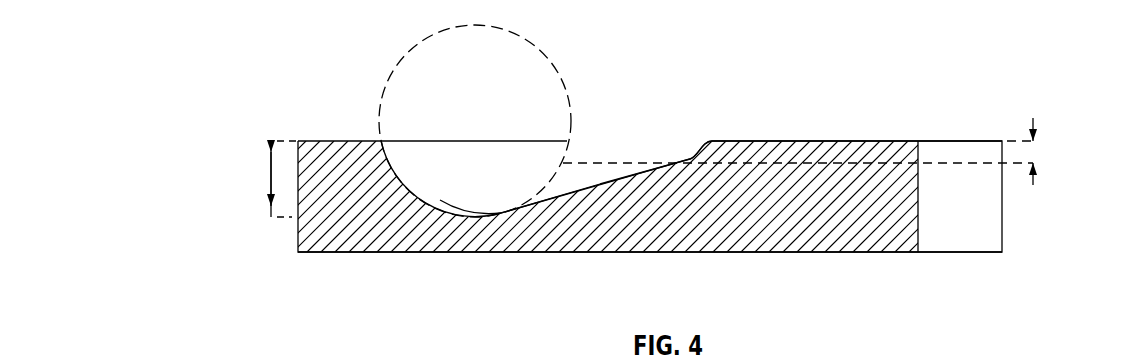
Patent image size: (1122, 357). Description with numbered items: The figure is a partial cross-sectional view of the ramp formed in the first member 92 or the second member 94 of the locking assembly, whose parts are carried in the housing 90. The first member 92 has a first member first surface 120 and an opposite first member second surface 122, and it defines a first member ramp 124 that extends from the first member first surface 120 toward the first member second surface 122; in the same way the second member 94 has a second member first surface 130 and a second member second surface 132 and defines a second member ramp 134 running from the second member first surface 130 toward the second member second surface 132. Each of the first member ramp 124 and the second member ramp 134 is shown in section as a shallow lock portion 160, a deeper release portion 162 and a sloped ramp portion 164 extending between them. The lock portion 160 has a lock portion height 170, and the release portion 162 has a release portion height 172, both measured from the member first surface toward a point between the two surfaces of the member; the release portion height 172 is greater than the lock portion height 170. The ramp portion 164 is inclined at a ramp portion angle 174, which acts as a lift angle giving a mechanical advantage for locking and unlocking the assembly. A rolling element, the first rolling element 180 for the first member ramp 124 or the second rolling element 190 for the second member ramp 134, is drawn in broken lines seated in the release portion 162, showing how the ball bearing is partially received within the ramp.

The housing 90 is at (861, 354).
The first member 92 is at (593, 153).
The second member 94 is at (887, 113).
The first member first surface 120 is at (857, 128).
The second member first surface 130 is at (763, 141).
The first member second surface 122 is at (650, 269).
The second member second surface 132 is at (855, 252).
The first member ramp 124 is at (552, 142).
The second member ramp 134 is at (637, 157).
The lock portion 160 is at (690, 162).
The release portion 162 is at (485, 218).
The ramp portion 164 is at (572, 195).
The ramp portion angle 174 is at (640, 182).
The lock portion height 170 is at (1035, 130).
The release portion height 172 is at (271, 178).
The first rolling element 180 is at (419, 121).
The second rolling element 190 is at (391, 66).